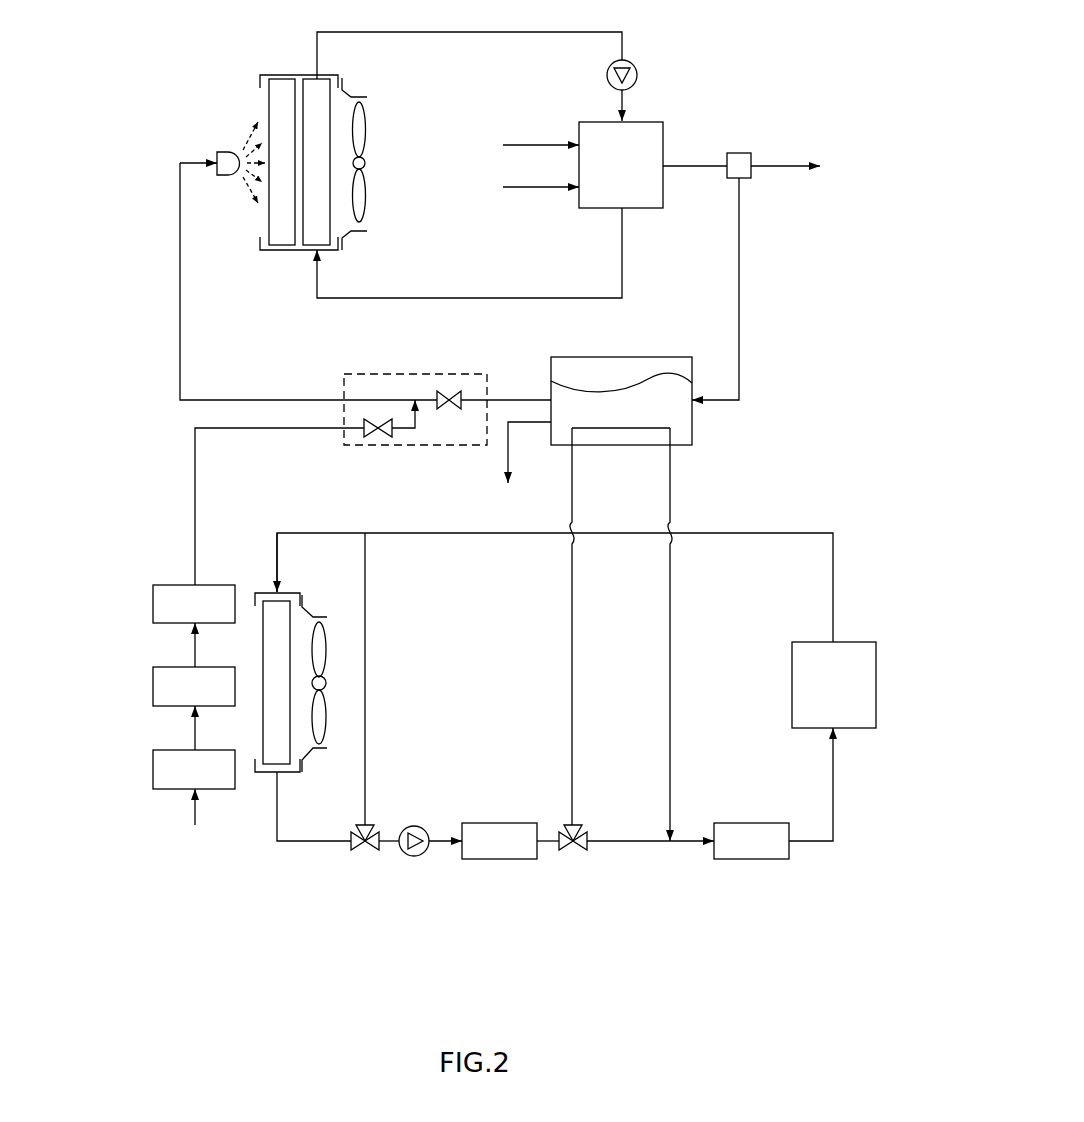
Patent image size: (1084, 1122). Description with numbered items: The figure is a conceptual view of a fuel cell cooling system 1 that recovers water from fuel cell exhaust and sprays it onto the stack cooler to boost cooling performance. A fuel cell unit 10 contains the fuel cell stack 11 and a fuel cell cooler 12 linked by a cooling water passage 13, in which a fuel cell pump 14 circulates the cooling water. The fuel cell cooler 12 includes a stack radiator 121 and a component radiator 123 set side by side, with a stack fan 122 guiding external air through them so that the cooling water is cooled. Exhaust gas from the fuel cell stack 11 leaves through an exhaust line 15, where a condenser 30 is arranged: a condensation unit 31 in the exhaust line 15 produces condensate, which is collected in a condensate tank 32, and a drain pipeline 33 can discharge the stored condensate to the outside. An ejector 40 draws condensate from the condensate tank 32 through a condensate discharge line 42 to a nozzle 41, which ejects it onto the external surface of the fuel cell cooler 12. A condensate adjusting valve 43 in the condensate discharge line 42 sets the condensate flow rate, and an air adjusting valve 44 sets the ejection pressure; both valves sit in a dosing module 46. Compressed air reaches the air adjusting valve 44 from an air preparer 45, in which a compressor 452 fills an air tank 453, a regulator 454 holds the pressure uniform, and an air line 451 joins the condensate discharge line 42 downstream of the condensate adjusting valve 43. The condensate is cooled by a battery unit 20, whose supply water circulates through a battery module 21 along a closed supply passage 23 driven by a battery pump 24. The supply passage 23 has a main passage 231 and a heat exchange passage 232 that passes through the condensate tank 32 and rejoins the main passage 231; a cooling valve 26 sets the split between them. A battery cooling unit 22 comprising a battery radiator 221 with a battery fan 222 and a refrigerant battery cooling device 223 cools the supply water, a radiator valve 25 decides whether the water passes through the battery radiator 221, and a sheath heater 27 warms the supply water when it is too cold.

The fuel cell cooling system 1 is at (504, 963).
The fuel cell unit 10 is at (668, 75).
The fuel cell stack 11 is at (663, 122).
The fuel cell cooler 12 is at (358, 84).
The stack radiator 121 is at (304, 75).
The stack fan 122 is at (365, 128).
The component radiator 123 is at (271, 75).
The cooling water passage 13 is at (467, 33).
The fuel cell pump 14 is at (606, 75).
The exhaust line 15 is at (780, 163).
The battery unit 20 is at (838, 528).
The battery module 21 is at (876, 642).
The battery cooling unit 22 is at (500, 747).
The battery radiator 221 is at (282, 752).
The battery fan 222 is at (322, 718).
The battery cooling device 223 is at (496, 818).
The supply passage 23 is at (782, 603).
The main passage 231 is at (833, 585).
The heat exchange passage 232 is at (671, 618).
The battery pump 24 is at (410, 861).
The radiator valve 25 is at (362, 858).
The cooling valve 26 is at (575, 858).
The sheath heater 27 is at (753, 862).
The condenser 30 is at (753, 367).
The condensation unit 31 is at (750, 178).
The condensate tank 32 is at (675, 357).
The drain pipeline 33 is at (528, 425).
The ejector 40 is at (168, 303).
The nozzle 41 is at (222, 193).
The condensate discharge line 42 is at (276, 398).
The condensate adjusting valve 43 is at (437, 390).
The air adjusting valve 44 is at (390, 437).
The air preparer 45 is at (168, 541).
The air line 451 is at (195, 492).
The compressor 452 is at (153, 768).
The air tank 453 is at (153, 686).
The regulator 454 is at (153, 603).
The dosing module 46 is at (487, 373).